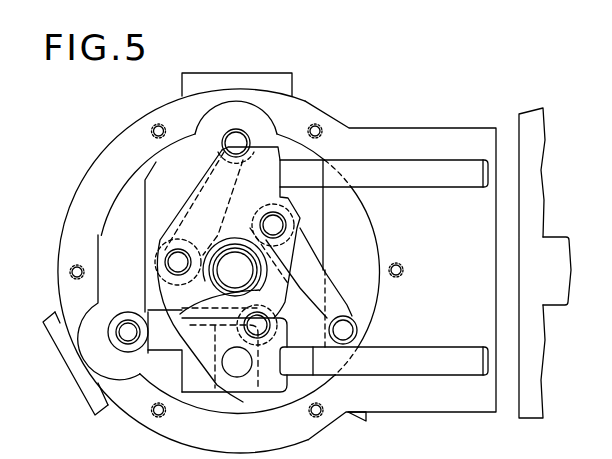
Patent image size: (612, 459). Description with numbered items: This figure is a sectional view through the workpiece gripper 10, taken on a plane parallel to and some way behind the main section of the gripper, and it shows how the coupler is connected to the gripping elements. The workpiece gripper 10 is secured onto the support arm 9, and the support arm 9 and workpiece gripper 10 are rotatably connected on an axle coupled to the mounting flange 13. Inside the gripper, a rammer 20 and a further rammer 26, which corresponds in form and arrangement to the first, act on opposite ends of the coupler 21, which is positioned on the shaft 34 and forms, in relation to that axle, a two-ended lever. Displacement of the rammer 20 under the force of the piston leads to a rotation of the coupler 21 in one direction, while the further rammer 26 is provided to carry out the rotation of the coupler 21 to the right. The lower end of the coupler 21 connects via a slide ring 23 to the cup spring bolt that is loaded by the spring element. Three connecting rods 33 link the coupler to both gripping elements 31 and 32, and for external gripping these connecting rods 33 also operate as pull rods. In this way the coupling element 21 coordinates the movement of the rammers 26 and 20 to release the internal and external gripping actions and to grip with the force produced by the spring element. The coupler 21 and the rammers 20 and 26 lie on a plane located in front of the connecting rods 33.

The support arm 9 is at (529, 357).
The workpiece gripper 10 is at (347, 152).
The mounting flange 13 is at (513, 207).
The rammer 20 is at (410, 186).
The coupler 21 is at (170, 293).
The slide ring 23 is at (233, 394).
The further rammer 26 is at (421, 373).
The gripping element 31 is at (258, 80).
The gripping element 32 is at (57, 340).
The connecting rods 33 is at (192, 195).
The shaft 34 is at (237, 275).